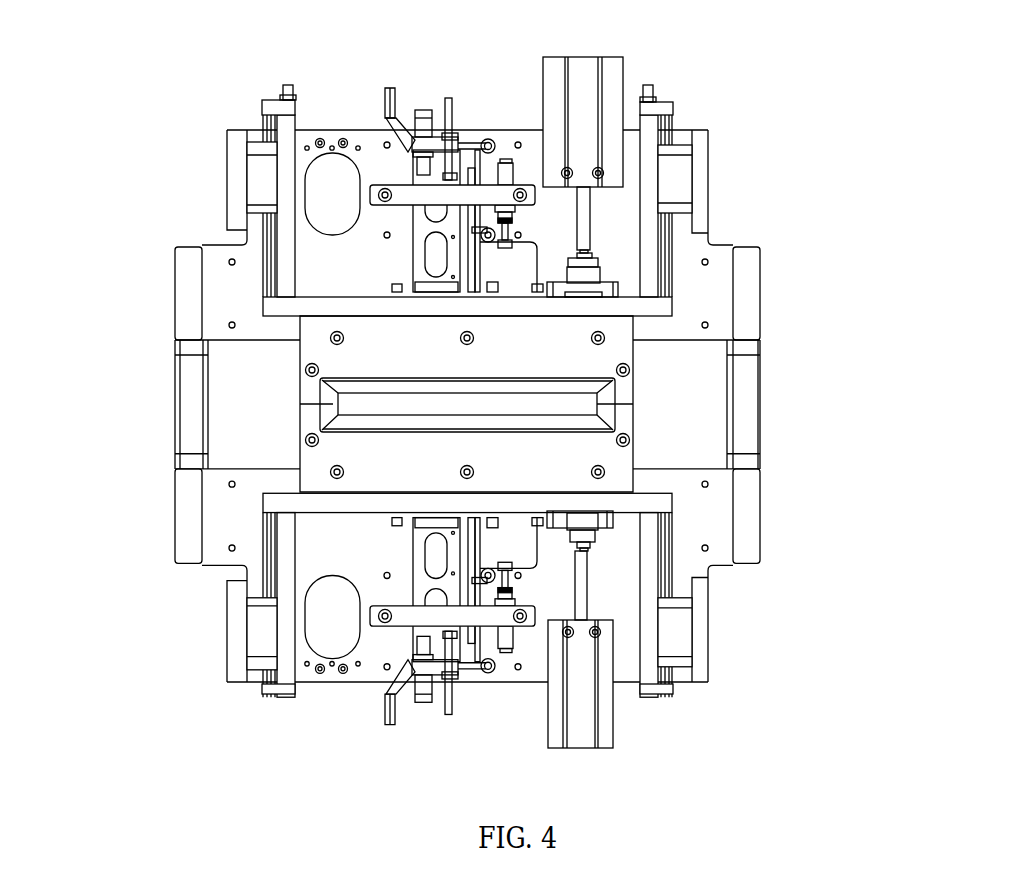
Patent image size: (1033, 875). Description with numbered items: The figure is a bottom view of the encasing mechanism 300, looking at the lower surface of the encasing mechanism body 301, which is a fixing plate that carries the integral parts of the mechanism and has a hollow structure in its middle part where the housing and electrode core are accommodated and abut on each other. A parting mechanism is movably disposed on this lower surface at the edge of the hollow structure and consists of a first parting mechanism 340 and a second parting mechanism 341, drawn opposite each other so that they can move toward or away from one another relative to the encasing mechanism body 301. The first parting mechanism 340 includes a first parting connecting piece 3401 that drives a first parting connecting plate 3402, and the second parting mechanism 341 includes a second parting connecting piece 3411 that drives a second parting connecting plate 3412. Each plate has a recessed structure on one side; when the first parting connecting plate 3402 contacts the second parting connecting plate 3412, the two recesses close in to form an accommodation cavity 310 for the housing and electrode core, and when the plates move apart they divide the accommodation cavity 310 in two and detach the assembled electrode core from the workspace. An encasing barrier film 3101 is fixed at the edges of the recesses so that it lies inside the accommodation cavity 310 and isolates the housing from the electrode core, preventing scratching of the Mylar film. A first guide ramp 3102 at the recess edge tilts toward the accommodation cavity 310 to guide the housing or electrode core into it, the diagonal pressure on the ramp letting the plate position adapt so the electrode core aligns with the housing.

The encasing mechanism 300 is at (482, 21).
The encasing mechanism body 301 is at (610, 230).
The accommodation cavity 310 is at (383, 403).
The encasing barrier film 3101 is at (373, 420).
The first guide ramp 3102 is at (448, 382).
The first parting mechanism 340 is at (583, 678).
The second parting mechanism 341 is at (587, 103).
The first parting connecting piece 3401 is at (578, 518).
The first parting connecting plate 3402 is at (608, 463).
The second parting connecting piece 3411 is at (605, 283).
The second parting connecting plate 3412 is at (590, 362).